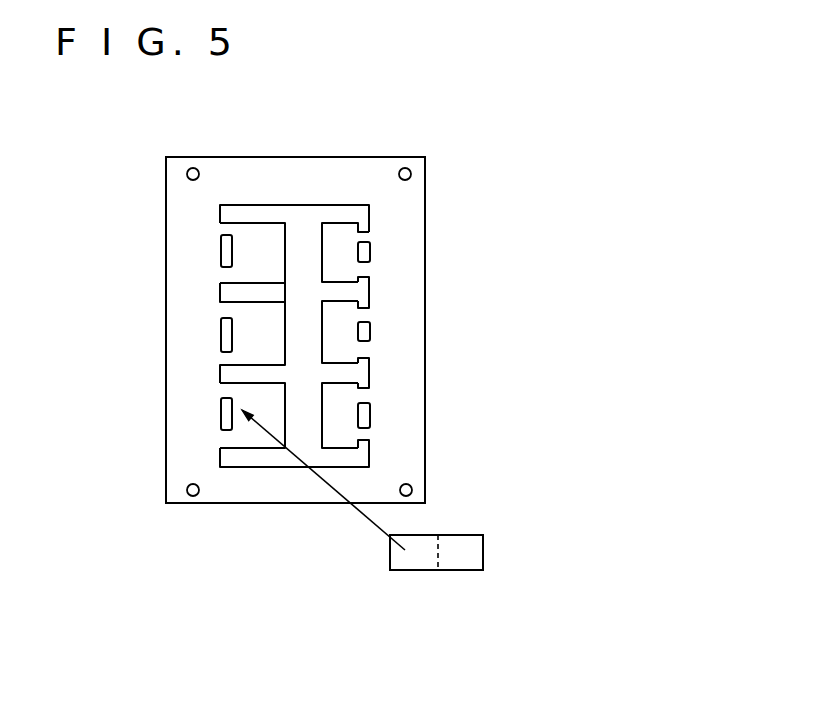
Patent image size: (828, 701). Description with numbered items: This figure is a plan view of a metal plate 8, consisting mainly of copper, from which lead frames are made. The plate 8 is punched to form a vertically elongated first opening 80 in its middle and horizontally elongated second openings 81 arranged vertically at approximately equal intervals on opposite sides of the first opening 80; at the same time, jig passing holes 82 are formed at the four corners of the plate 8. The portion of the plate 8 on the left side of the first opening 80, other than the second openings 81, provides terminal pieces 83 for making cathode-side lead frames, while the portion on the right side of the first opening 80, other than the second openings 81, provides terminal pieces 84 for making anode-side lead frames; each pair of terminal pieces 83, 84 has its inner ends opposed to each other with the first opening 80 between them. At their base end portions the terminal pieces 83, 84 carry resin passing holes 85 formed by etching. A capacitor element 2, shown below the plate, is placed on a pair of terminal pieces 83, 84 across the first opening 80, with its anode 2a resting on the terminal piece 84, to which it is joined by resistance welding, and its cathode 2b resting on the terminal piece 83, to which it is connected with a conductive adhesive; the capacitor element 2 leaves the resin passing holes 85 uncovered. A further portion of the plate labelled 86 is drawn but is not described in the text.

The capacitor element 2 is at (363, 544).
The anode 2a is at (461, 585).
The cathode 2b is at (410, 563).
The metal plate 8 is at (413, 220).
The first opening 80 is at (286, 253).
The second openings 81 is at (341, 283).
The jig passing holes 82 is at (196, 167).
The terminal pieces 83 is at (255, 232).
The terminal pieces 84 is at (343, 235).
The resin passing holes 85 is at (220, 243).
The bottom bar portion 86 is at (273, 467).